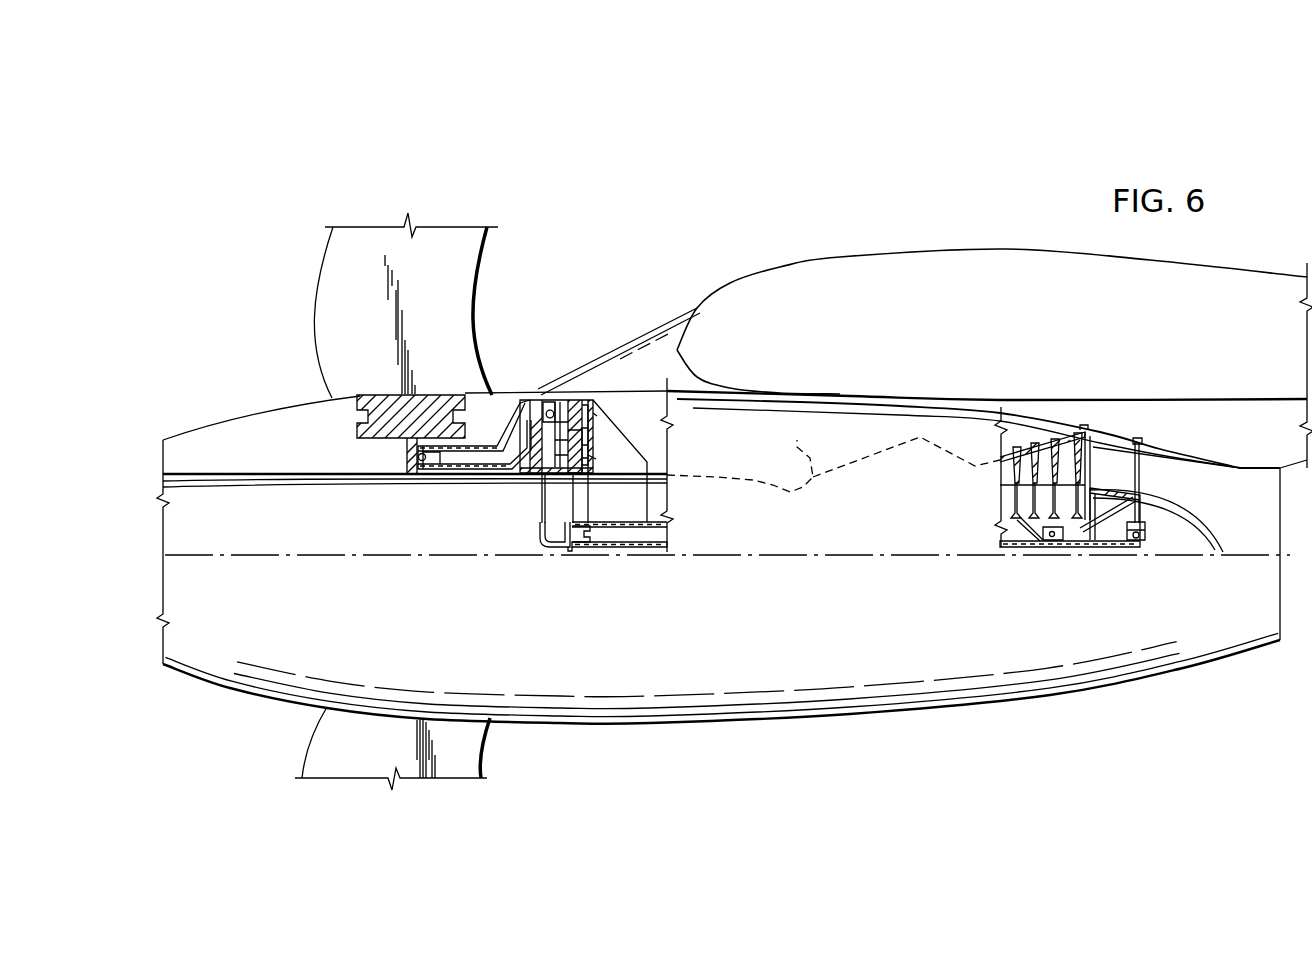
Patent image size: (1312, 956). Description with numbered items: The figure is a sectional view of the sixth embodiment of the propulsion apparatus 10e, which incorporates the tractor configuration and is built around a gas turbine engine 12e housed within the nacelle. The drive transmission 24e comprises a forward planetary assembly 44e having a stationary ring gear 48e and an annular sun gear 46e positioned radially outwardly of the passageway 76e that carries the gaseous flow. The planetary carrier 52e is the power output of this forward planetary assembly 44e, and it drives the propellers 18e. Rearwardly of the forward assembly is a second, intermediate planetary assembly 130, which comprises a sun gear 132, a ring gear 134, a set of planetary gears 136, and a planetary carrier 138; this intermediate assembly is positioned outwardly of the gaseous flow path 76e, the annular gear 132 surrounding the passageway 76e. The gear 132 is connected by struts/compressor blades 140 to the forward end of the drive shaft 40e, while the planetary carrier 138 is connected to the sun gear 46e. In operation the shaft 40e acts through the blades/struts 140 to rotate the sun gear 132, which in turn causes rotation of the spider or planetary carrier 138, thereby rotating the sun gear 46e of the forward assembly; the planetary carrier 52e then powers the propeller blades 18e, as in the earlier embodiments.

The propulsion apparatus 10e is at (257, 400).
The gas turbine engine 12e is at (797, 448).
The propellers 18e is at (475, 260).
The drive transmission 24e is at (557, 393).
The drive shaft 40e is at (640, 542).
The forward planetary assembly 44e is at (530, 386).
The annular sun gear 46e is at (530, 478).
The stationary ring gear 48e is at (530, 393).
The planetary carrier 52e is at (442, 468).
The passageway 76e is at (553, 478).
The second planetary assembly 130 is at (590, 393).
The sun gear 132 is at (560, 535).
The ring gear 134 is at (570, 393).
The set of planetary gears 136 is at (596, 458).
The planetary carrier 138 is at (596, 415).
The struts/compressor blades 140 is at (586, 507).